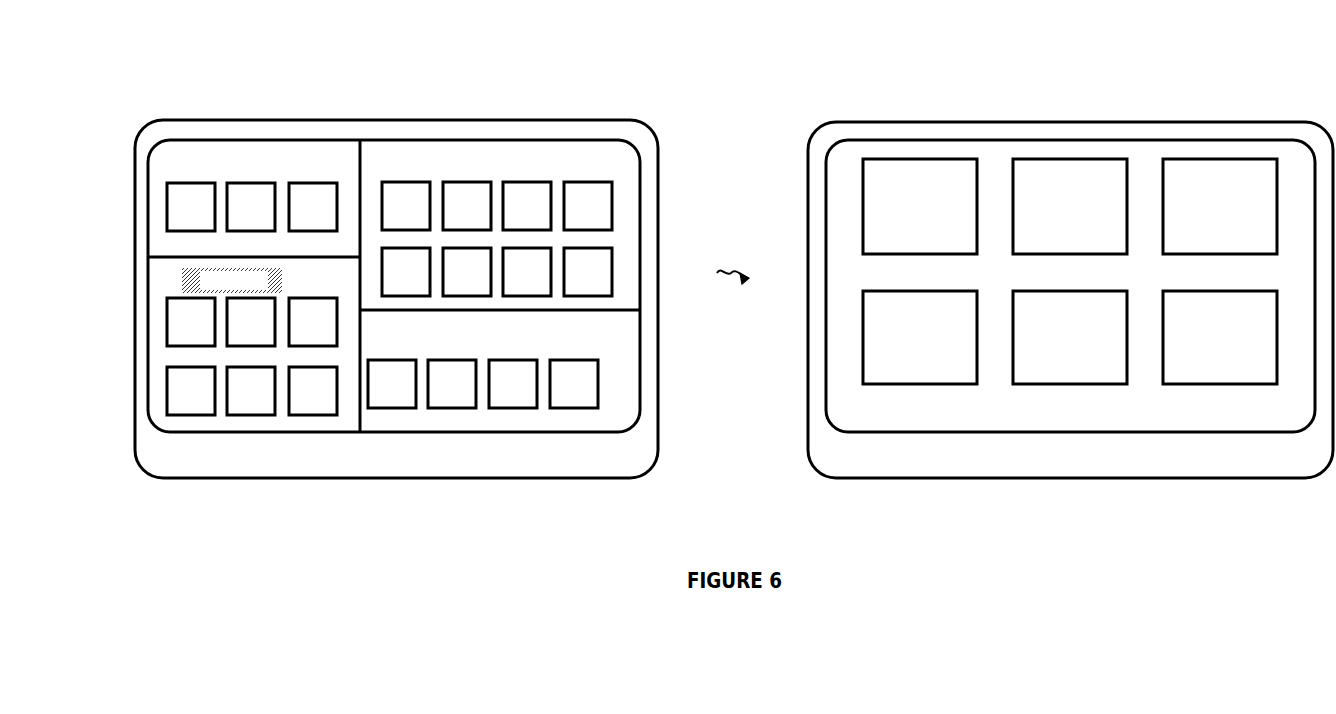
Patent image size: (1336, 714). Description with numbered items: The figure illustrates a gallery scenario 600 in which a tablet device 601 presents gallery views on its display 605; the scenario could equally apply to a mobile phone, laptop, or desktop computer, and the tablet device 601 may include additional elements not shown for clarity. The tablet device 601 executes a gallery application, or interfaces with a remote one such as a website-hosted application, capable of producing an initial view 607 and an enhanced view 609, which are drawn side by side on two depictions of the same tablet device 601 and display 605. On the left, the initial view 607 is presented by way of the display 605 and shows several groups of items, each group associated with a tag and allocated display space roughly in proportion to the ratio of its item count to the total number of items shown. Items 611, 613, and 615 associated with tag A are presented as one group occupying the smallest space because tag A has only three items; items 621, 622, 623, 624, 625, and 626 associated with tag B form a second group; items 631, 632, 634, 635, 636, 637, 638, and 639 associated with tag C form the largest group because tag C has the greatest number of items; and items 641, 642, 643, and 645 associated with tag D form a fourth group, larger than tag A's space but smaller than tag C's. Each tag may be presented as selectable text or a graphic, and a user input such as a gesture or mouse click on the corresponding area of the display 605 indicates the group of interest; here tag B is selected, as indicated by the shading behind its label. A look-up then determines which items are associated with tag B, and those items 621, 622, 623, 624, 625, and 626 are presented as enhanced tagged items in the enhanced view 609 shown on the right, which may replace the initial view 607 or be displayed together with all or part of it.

The gallery scenario 600 is at (126, 77).
The tablet device 601 is at (132, 343).
The display 605 is at (550, 434).
The initial view 607 is at (338, 170).
The enhanced view 609 is at (885, 421).
The item 611 is at (176, 216).
The item 613 is at (236, 216).
The item 615 is at (298, 216).
The item 621 is at (176, 331).
The item 622 is at (236, 331).
The item 623 is at (298, 331).
The item 624 is at (176, 400).
The item 625 is at (236, 400).
The item 626 is at (298, 400).
The item 631 is at (391, 215).
The item 632 is at (452, 215).
The item 634 is at (512, 215).
The item 635 is at (573, 215).
The item 636 is at (391, 281).
The item 637 is at (452, 281).
The item 638 is at (512, 281).
The item 639 is at (573, 281).
The item 641 is at (377, 393).
The item 642 is at (437, 393).
The item 643 is at (498, 393).
The item 645 is at (559, 393).